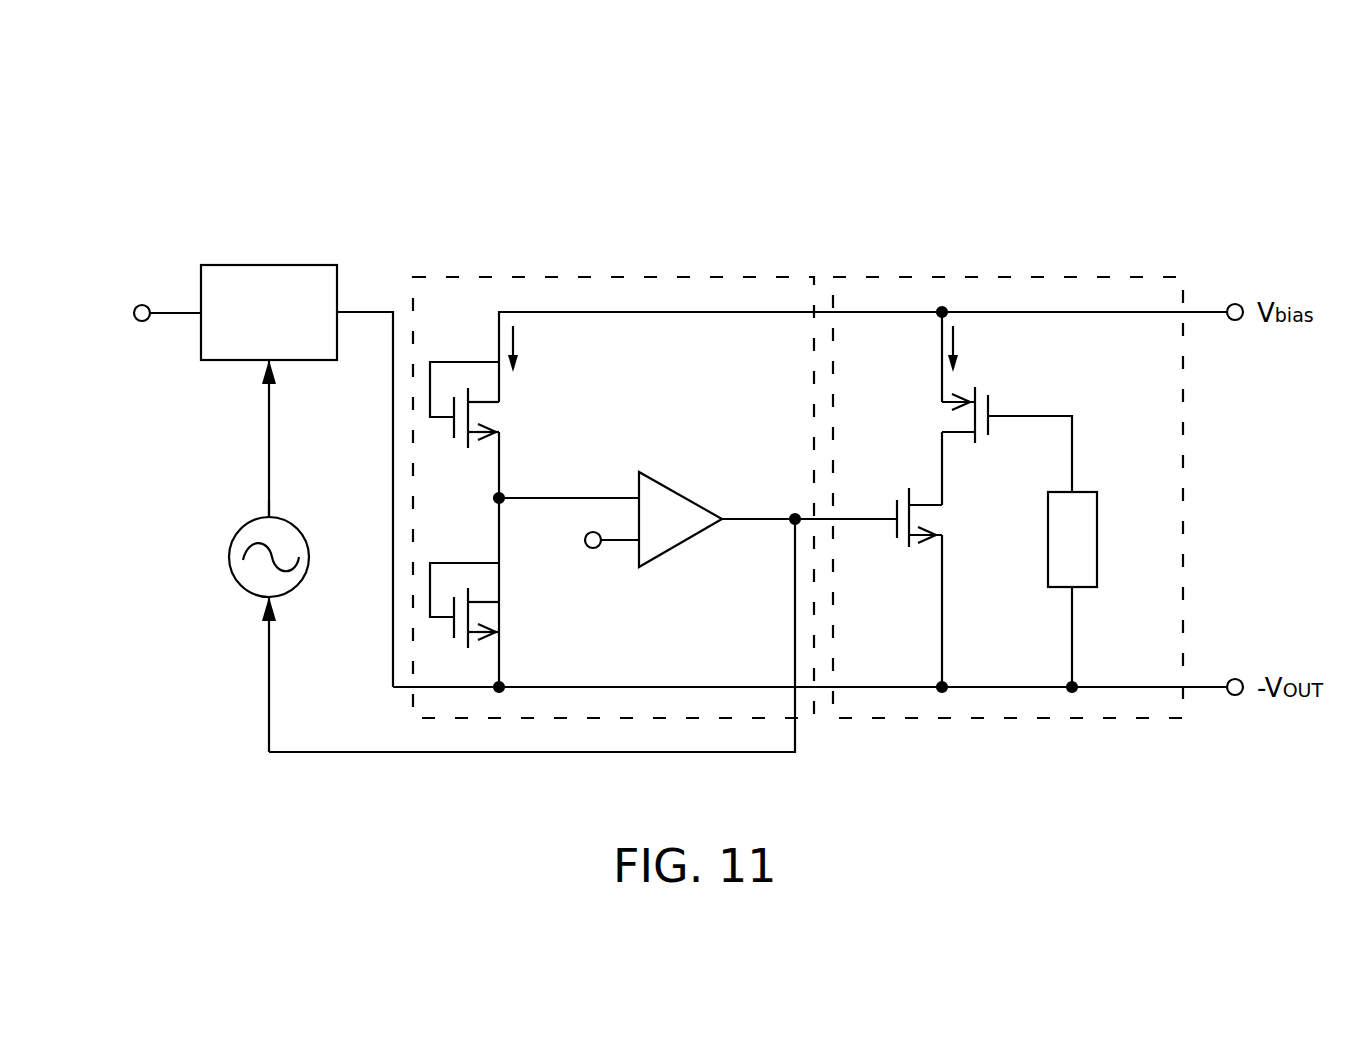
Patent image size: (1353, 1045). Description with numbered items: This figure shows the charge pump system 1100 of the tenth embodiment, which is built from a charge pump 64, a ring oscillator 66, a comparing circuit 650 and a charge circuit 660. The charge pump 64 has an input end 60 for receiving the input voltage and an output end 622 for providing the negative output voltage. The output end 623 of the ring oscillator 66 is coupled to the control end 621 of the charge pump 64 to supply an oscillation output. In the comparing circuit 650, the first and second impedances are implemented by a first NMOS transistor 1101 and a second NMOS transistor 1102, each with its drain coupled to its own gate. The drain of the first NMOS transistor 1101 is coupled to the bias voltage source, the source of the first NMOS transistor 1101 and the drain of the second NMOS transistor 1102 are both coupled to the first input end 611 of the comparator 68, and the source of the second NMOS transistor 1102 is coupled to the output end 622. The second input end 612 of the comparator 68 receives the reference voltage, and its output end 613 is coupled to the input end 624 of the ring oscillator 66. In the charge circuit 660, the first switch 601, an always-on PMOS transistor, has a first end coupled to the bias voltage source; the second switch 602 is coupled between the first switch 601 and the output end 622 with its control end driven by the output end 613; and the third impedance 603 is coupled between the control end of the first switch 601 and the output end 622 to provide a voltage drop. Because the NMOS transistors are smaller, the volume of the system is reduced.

The charge pump system 1100 is at (1147, 140).
The input end 60 is at (142, 305).
The charge pump 64 is at (266, 265).
The ring oscillator 66 is at (229, 556).
The control end 621 is at (262, 365).
The output end 622 is at (340, 312).
The output end 623 is at (268, 516).
The input end 624 is at (268, 600).
The comparing circuit 650 is at (630, 277).
The charge circuit 660 is at (1008, 277).
The first NMOS transistor 1101 is at (505, 412).
The second NMOS transistor 1102 is at (505, 612).
The comparator 68 is at (682, 488).
The first input end 611 is at (648, 478).
The second input end 612 is at (648, 566).
The output end 613 is at (724, 523).
The first switch 601 is at (988, 395).
The second switch 602 is at (899, 493).
The third impedance 603 is at (1097, 537).